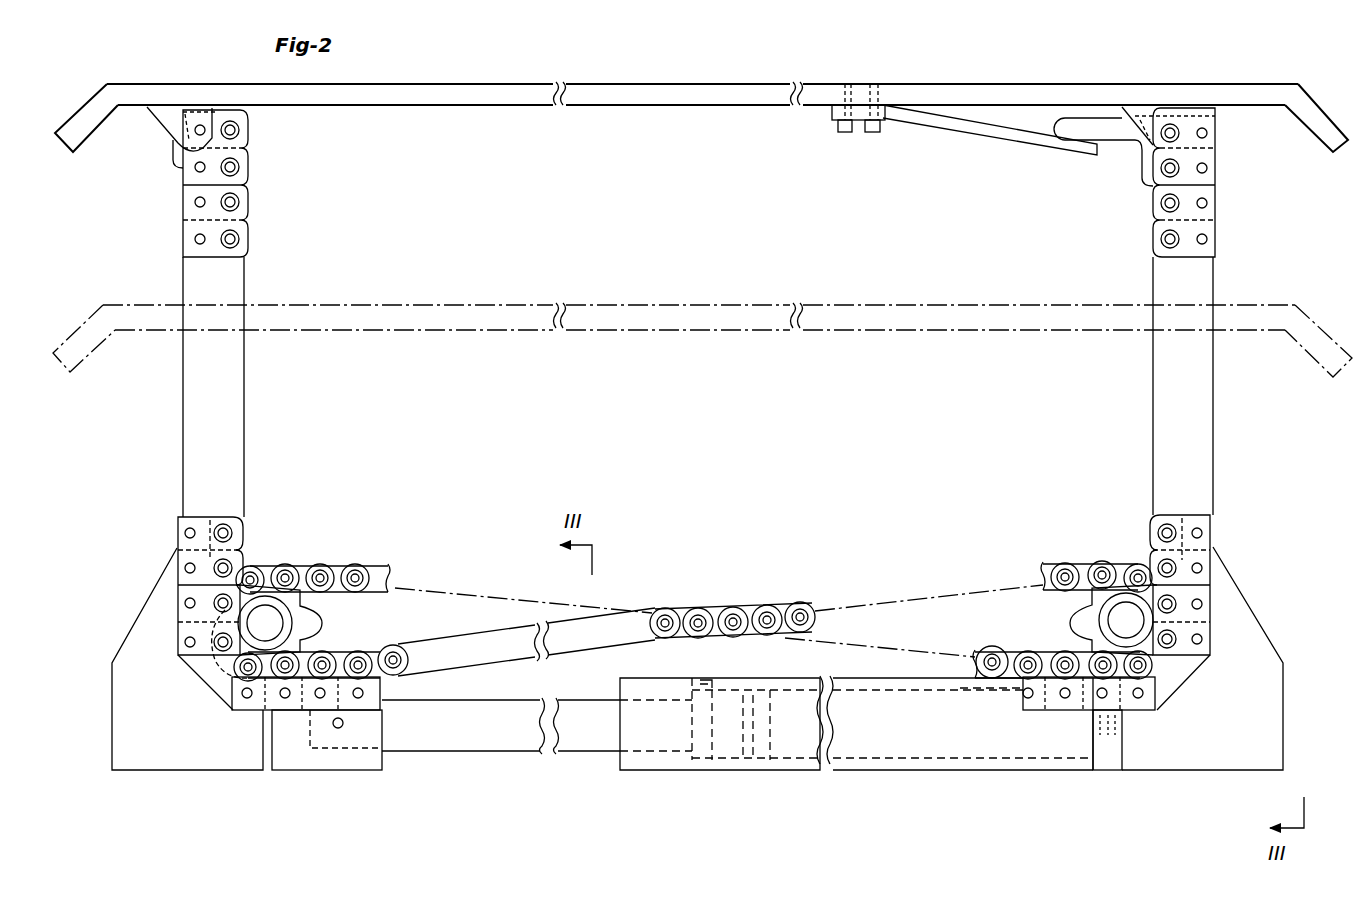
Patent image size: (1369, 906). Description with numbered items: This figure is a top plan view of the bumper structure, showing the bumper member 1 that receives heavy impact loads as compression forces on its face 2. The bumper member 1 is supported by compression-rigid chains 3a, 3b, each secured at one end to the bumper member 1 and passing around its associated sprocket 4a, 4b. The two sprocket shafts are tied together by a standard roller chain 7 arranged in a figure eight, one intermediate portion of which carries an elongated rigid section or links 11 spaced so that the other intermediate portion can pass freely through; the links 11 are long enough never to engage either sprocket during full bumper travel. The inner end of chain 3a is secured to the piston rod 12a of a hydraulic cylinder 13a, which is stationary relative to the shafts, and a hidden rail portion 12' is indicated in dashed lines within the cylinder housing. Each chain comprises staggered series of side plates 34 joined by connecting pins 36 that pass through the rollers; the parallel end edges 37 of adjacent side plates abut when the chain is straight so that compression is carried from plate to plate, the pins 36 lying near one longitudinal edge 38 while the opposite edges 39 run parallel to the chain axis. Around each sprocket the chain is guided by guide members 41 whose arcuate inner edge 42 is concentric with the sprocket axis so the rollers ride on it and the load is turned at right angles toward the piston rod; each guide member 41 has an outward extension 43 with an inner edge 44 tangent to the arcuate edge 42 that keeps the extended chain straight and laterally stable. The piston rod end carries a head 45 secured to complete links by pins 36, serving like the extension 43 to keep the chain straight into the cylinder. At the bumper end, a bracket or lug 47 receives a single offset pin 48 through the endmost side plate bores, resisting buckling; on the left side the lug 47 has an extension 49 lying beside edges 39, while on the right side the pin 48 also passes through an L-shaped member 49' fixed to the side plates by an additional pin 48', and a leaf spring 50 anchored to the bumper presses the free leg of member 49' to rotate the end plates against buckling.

The bumper member 1 is at (651, 110).
The face 2 is at (653, 93).
The chain 3a is at (258, 205).
The chain 3b is at (1218, 205).
The sprocket 4a is at (305, 608).
The sprocket 4b is at (1078, 625).
The roller chain 7 is at (732, 602).
The rigid section 11 is at (627, 622).
The piston rod 12a is at (463, 742).
The hidden rail section 12' is at (756, 753).
The hydraulic cylinder 13a is at (893, 760).
The side plates 34 is at (243, 193).
The connecting pins 36 is at (236, 243).
The end edges 37 is at (187, 198).
The longitudinal edge 38 is at (245, 242).
The opposite edges 39 is at (183, 240).
The guide members 41 is at (213, 758).
The arcuate inner edge 42 is at (235, 655).
The extension 43 is at (172, 575).
The inner edge 44 is at (243, 527).
The head 45 is at (342, 762).
The bracket or lug 47 is at (178, 108).
The pin 48 is at (733, 107).
The additional pin 48' is at (1225, 178).
The extension 49 is at (149, 152).
The L-shaped member 49' is at (1103, 158).
The leaf spring 50 is at (982, 138).